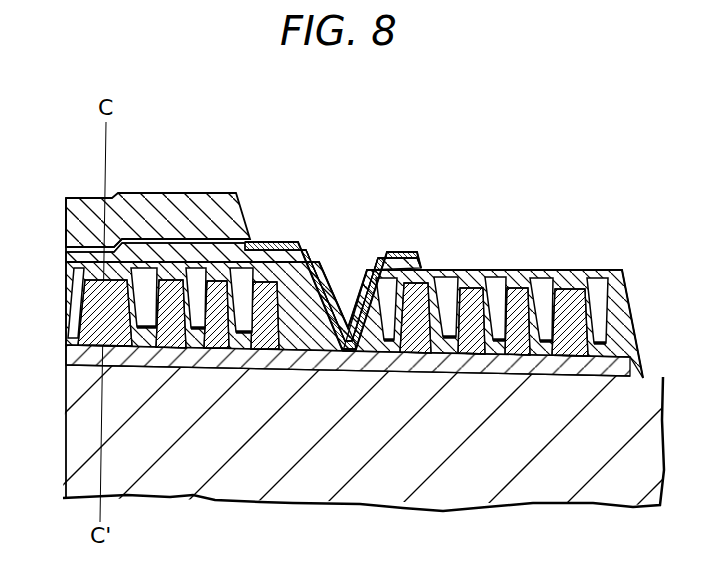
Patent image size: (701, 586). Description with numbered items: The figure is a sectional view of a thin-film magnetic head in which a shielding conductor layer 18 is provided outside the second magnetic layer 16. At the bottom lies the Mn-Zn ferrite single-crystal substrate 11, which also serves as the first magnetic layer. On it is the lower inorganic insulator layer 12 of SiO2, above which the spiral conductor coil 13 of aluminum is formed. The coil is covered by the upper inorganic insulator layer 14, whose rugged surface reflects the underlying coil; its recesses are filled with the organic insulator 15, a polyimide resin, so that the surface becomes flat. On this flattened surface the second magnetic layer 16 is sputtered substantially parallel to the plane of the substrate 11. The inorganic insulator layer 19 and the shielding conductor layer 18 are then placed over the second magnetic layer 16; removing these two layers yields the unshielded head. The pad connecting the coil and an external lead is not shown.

The Mn-Zn ferrite single-crystal substrate 11 is at (366, 493).
The inorganic insulator layer 12 is at (67, 355).
The conductor coil 13 is at (283, 288).
The inorganic insulator layer 14 is at (67, 333).
The organic insulator 15 is at (72, 283).
The second magnetic layer 16 is at (70, 253).
The shielding conductor layer 18 is at (205, 208).
The inorganic insulator layer 19 is at (296, 241).